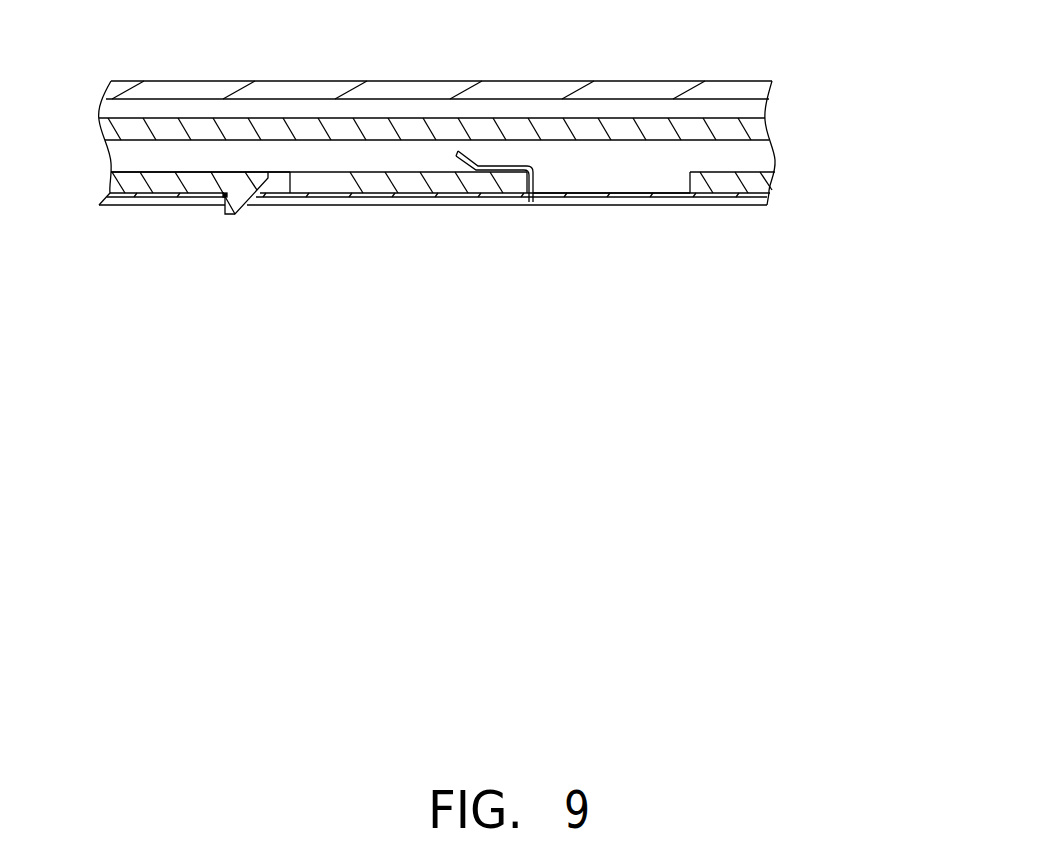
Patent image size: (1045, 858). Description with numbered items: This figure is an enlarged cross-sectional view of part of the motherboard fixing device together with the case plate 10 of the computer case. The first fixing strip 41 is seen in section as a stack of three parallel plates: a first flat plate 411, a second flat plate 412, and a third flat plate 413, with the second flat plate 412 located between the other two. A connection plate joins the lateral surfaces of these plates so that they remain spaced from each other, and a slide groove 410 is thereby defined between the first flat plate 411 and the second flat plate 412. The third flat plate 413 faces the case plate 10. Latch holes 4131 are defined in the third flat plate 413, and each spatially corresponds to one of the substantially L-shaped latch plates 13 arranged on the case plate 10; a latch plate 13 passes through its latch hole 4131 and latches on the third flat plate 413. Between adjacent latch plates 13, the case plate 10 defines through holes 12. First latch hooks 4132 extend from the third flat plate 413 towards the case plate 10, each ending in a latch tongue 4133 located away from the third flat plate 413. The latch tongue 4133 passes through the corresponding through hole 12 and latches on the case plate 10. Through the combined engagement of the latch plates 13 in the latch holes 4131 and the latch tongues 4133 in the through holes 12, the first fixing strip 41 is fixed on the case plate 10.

The first fixing strip 41 is at (853, 56).
The slide groove 410 is at (628, 108).
The first flat plate 411 is at (740, 92).
The second flat plate 412 is at (738, 130).
The third flat plate 413 is at (758, 180).
The latch hole 4131 is at (612, 182).
The first latch hook 4132 is at (130, 182).
The latch tongue 4133 is at (237, 198).
The case plate 10 is at (462, 197).
The through hole 12 is at (278, 197).
The latch plate 13 is at (533, 187).